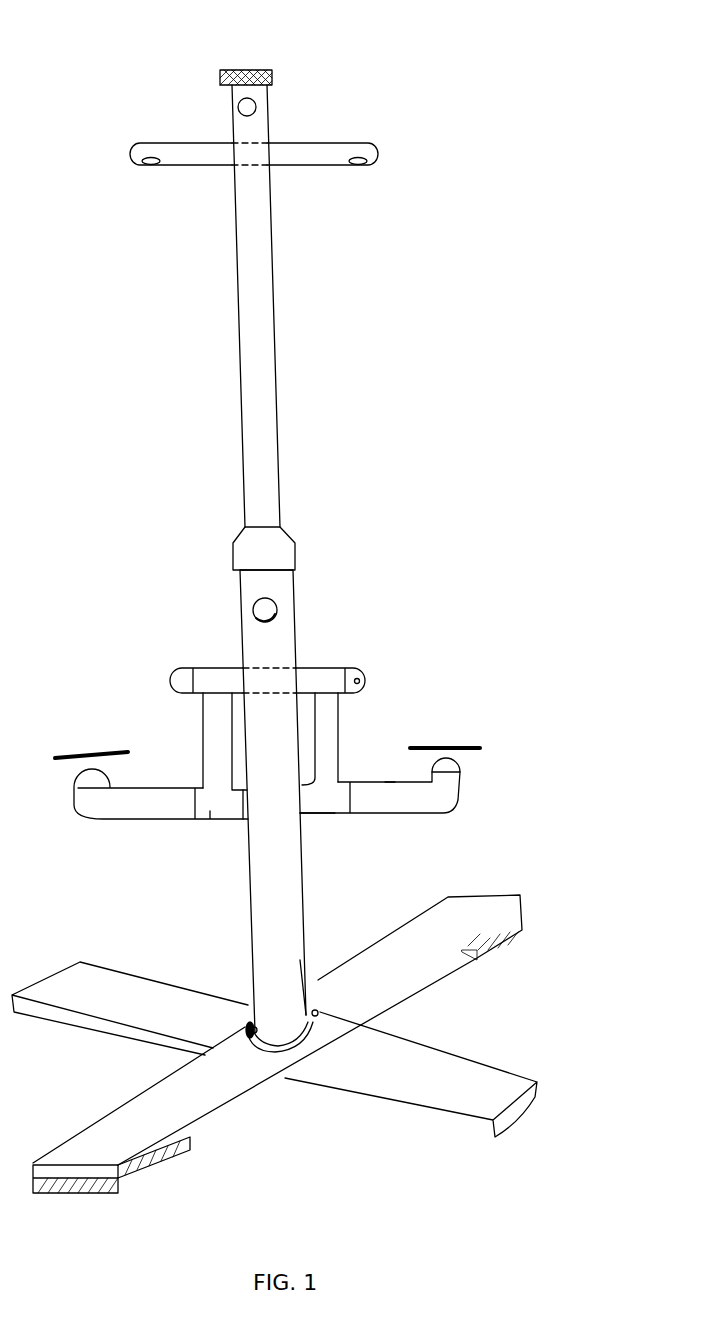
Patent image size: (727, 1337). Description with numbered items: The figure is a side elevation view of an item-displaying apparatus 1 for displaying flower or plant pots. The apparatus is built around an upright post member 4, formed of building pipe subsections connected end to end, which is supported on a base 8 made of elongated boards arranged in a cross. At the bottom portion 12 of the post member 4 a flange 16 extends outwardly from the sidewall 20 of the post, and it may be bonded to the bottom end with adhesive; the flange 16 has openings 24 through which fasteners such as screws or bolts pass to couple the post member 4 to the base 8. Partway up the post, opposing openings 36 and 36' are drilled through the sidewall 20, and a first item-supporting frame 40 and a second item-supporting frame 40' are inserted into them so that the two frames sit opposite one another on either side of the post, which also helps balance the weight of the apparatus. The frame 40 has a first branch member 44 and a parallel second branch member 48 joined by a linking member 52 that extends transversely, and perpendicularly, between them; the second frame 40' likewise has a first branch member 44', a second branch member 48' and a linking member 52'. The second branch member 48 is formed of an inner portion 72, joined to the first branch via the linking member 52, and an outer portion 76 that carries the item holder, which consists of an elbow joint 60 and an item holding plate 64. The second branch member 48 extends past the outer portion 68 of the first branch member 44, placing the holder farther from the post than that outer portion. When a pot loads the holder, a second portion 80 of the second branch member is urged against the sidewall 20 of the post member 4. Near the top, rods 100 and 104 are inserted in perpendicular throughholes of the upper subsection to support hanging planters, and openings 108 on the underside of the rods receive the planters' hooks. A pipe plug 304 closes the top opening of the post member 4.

The item-displaying apparatus 1 is at (97, 33).
The post member 4 is at (322, 522).
The base 8 is at (538, 1020).
The bottom portion of the post member 12 is at (308, 987).
The flange 16 is at (250, 1005).
The sidewall 20 is at (305, 858).
The openings 24 is at (320, 1013).
The opening 36 is at (294, 632).
The opening 36' is at (250, 652).
The item-supporting frame 40 is at (425, 726).
The second item-supporting frame 40' is at (132, 737).
The first branch member 44 is at (341, 658).
The first branch member 44' is at (196, 658).
The second branch member 48 is at (380, 816).
The second branch member 48' is at (161, 815).
The linking member 52 is at (343, 739).
The linking member 52' is at (199, 741).
The elbow joint 60 is at (443, 788).
The item holding plate 64 is at (457, 750).
The outer portion of the first branch member 68 is at (357, 675).
The inner portion 72 is at (330, 818).
The outer portion 76 is at (390, 792).
The second portion of the second branch member 80 is at (248, 817).
The rod 100 is at (257, 107).
The rod 104 is at (335, 148).
The openings 108 is at (153, 165).
The pipe plug 304 is at (243, 70).